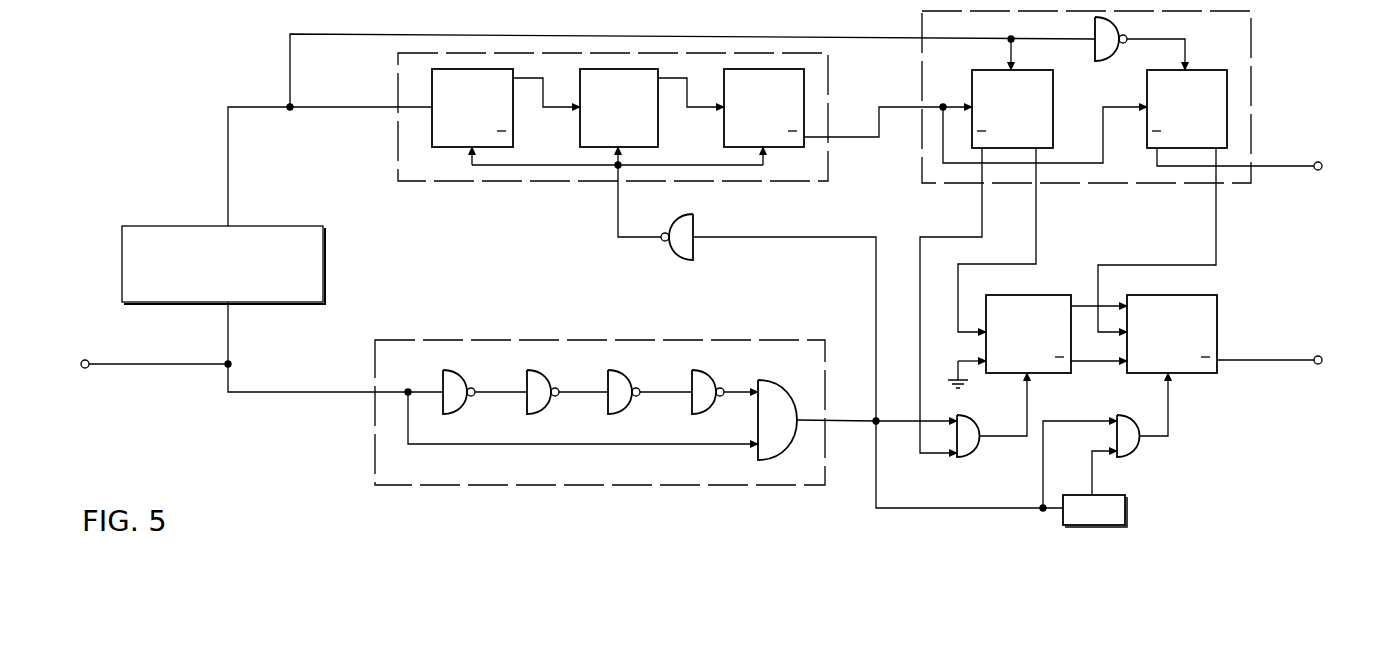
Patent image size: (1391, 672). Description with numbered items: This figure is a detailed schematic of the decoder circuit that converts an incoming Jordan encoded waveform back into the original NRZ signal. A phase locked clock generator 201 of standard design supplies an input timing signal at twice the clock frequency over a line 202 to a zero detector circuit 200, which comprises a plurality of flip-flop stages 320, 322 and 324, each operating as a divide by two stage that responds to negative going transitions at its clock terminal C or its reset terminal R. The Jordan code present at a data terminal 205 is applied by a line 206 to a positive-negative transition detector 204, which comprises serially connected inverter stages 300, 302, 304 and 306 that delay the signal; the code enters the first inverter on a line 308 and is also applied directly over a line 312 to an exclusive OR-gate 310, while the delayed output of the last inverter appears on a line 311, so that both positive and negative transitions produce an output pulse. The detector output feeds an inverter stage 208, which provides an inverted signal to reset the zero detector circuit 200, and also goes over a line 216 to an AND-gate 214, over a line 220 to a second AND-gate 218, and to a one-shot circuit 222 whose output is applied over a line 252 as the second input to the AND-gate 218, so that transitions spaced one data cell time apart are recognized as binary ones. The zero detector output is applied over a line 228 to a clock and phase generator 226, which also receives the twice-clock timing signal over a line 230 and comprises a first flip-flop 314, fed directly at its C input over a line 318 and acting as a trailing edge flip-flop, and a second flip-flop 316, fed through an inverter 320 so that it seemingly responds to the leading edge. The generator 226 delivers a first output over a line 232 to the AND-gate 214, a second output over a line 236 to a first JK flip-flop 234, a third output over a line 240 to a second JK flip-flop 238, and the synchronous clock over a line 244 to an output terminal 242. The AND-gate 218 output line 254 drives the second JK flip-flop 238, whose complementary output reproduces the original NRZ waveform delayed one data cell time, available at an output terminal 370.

The zero detector circuit 200 is at (398, 145).
The phase locked clock generator 201 is at (325, 272).
The line 202 is at (228, 166).
The positive-negative transition detector 204 is at (443, 338).
The data terminal 205 is at (82, 370).
The line 206 is at (288, 393).
The inverter stage 208 is at (670, 257).
The AND-gate 214 is at (978, 457).
The line 216 is at (935, 422).
The second AND-gate 218 is at (1130, 397).
The line 220 is at (1043, 470).
The one-shot circuit 222 is at (1128, 513).
The clock and phase generator 226 is at (1285, 45).
The line 228 is at (852, 135).
The line 230 is at (806, 38).
The line 232 is at (981, 207).
The first JK flip-flop 234 is at (1018, 295).
The line 236 is at (1036, 237).
The second JK flip-flop 238 is at (1216, 301).
The line 240 is at (1216, 203).
The output terminal 242 is at (1323, 170).
The line 244 is at (1303, 170).
The line 252 is at (1096, 475).
The AND gate output line 254 is at (1170, 413).
The inverter stage 300 is at (460, 363).
The inverter stage 302 is at (545, 363).
The inverter stage 304 is at (627, 363).
The inverter stage 306 is at (715, 363).
The line 308 is at (420, 368).
The exclusive OR-gate 310 is at (779, 382).
The line 311 is at (740, 398).
The line 312 is at (683, 448).
The first flip-flop 314 is at (972, 86).
The second flip-flop 316 is at (1147, 76).
The line 318 is at (1011, 52).
The inverter / flip-flop stage 320 is at (452, 148).
The flip-flop stage 322 is at (580, 147).
The flip-flop stage 324 is at (724, 147).
The output terminal 370 is at (1319, 355).